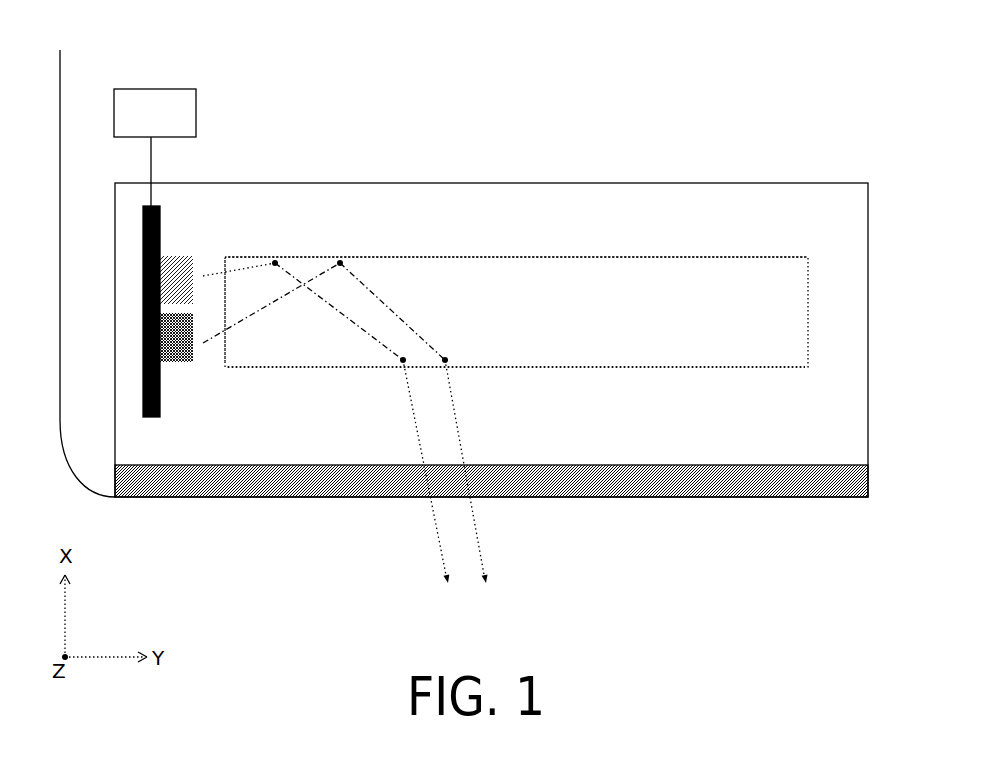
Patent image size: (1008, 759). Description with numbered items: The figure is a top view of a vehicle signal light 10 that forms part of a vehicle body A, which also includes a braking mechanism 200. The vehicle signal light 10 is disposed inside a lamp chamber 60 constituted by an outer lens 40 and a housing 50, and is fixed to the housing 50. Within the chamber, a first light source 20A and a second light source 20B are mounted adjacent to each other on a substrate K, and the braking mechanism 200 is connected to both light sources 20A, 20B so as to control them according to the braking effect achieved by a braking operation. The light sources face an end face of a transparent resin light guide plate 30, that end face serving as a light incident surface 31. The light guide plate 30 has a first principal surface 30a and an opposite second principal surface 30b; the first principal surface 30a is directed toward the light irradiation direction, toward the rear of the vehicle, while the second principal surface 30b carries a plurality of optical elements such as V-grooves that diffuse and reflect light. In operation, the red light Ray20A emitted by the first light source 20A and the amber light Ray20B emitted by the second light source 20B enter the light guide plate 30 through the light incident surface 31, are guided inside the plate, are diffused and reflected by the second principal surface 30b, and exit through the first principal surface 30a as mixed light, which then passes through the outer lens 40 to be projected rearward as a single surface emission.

The vehicle signal light 10 is at (486, 83).
The first light source 20A is at (183, 362).
The second light source 20B is at (180, 257).
The light guide plate 30 is at (607, 368).
The first principal surface 30a is at (730, 367).
The second principal surface 30b is at (733, 257).
The light incident surface 31 is at (225, 350).
The outer lens 40 is at (762, 497).
The housing 50 is at (545, 180).
The lamp chamber 60 is at (641, 233).
The braking mechanism 200 is at (196, 109).
The substrate K is at (155, 420).
The vehicle body A is at (60, 80).
The red light Ray20A is at (480, 541).
The amber light Ray20B is at (440, 541).